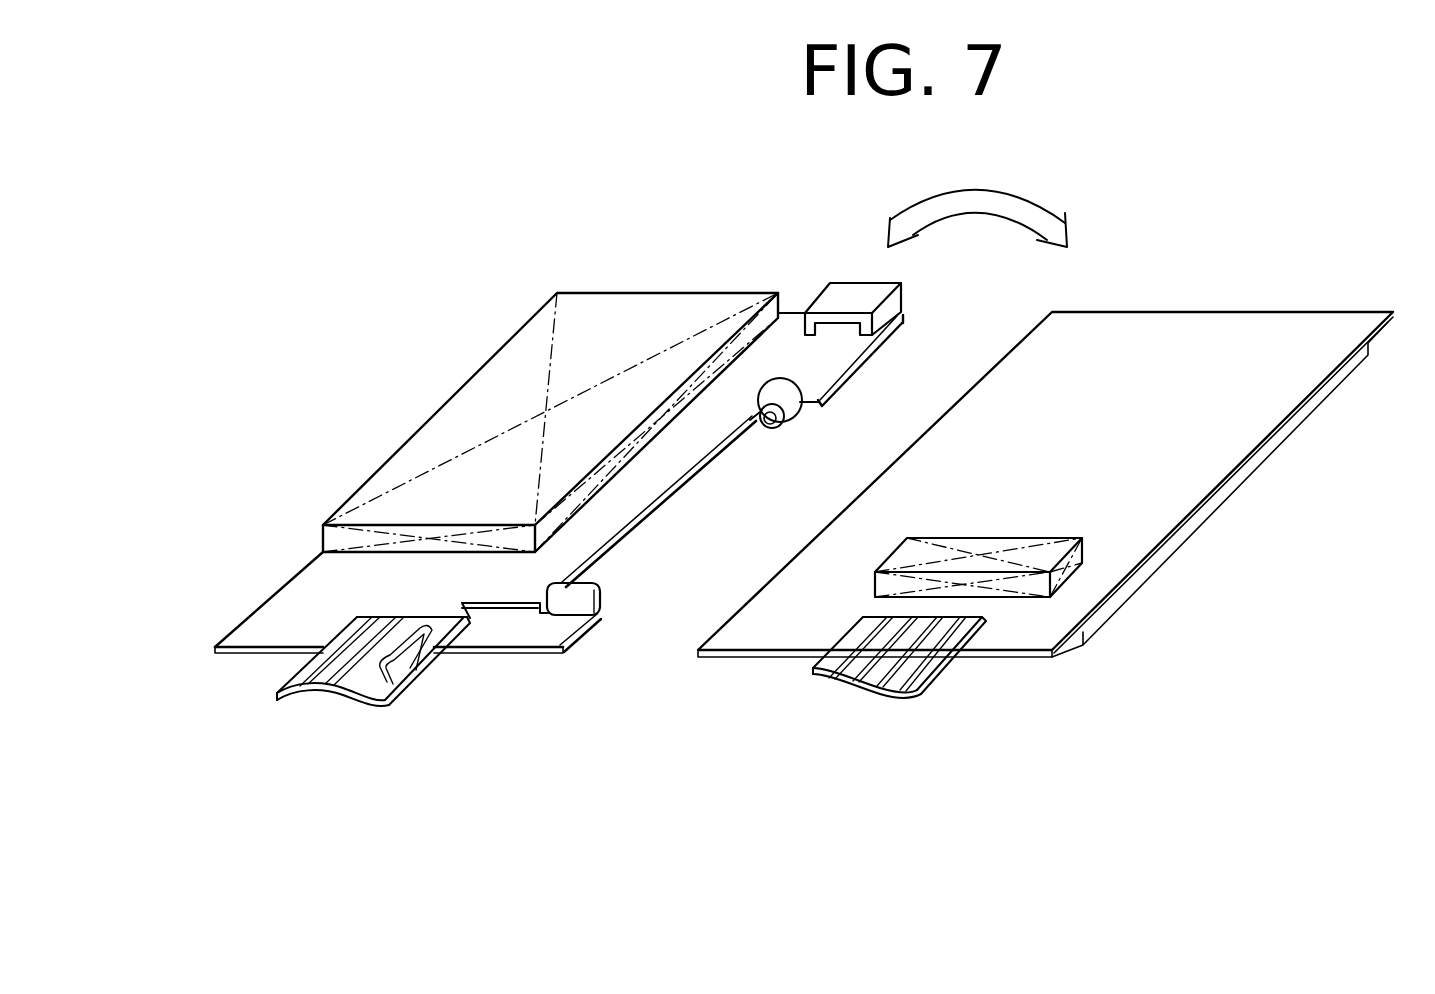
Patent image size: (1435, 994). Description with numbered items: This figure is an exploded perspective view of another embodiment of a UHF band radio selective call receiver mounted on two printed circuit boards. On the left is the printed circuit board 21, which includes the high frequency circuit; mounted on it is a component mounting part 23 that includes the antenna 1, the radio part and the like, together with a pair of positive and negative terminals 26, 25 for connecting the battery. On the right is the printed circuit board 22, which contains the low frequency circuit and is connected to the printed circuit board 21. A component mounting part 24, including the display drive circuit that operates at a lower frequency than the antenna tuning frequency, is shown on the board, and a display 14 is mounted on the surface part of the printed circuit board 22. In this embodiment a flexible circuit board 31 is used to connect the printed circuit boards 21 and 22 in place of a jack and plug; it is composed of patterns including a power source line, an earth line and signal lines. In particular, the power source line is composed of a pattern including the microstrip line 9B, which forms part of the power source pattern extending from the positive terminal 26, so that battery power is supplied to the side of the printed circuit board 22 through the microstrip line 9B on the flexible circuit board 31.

The antenna 1 is at (835, 297).
The microstrip line 9B is at (403, 680).
The display 14 is at (1258, 468).
The printed circuit board 21 is at (258, 635).
The printed circuit board 22 is at (1207, 312).
The component mounting part 23 is at (500, 382).
The component mounting part 24 is at (1048, 537).
The negative terminal 25 is at (797, 435).
The positive terminal 26 is at (600, 588).
The flexible circuit board 31 is at (343, 630).